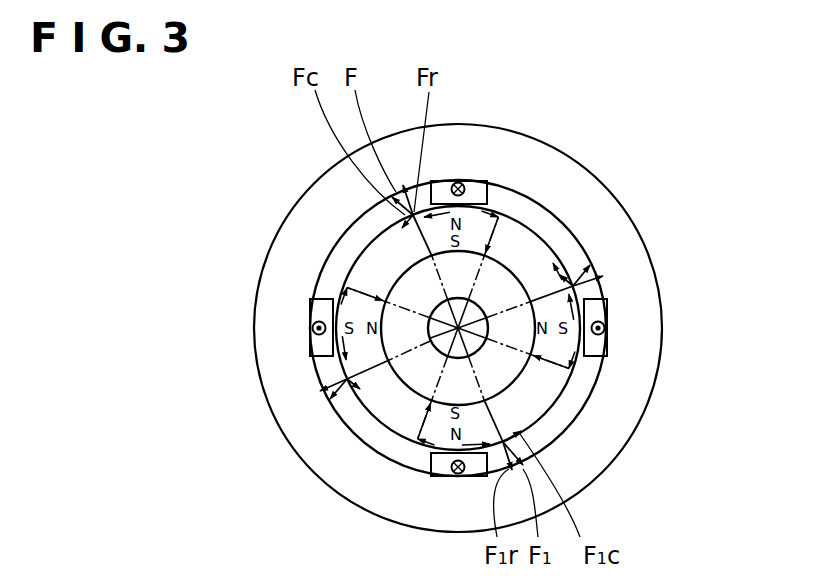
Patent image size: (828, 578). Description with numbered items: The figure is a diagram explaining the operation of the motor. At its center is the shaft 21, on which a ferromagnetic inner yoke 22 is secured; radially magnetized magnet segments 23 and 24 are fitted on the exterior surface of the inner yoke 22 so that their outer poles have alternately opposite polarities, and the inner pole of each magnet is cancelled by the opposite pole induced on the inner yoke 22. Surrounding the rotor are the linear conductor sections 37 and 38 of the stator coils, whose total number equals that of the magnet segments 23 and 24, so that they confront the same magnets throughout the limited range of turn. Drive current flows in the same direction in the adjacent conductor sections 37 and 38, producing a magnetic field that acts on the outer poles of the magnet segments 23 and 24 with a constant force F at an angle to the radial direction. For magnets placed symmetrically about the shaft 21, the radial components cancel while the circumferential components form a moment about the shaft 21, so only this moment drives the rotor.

The shaft 21 is at (443, 318).
The inner yoke 22 is at (510, 282).
The magnet segment 23 is at (403, 227).
The magnet segment 24 is at (526, 285).
The linear conductor section 37 is at (477, 181).
The linear conductor section 38 is at (320, 310).